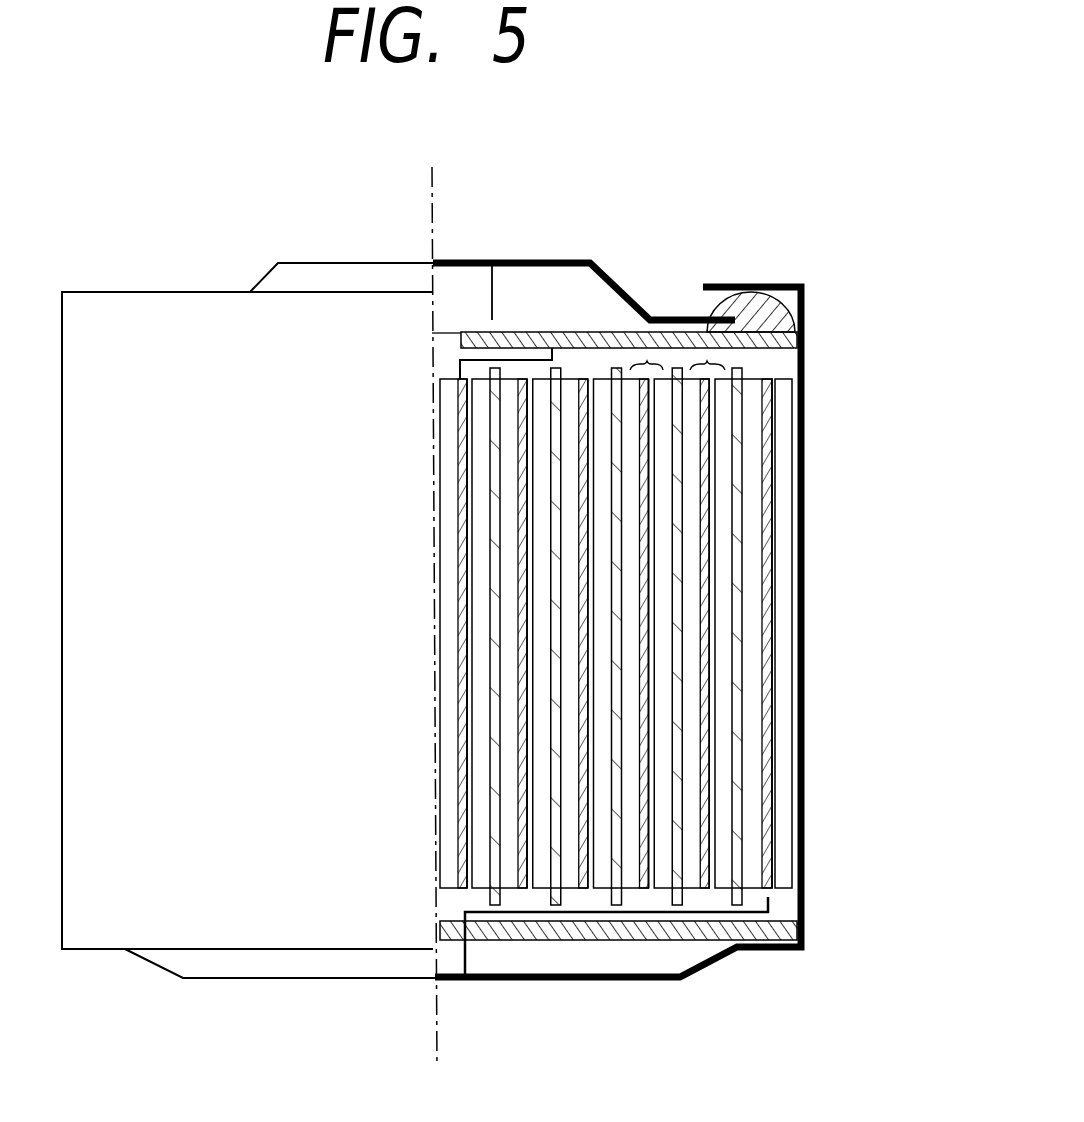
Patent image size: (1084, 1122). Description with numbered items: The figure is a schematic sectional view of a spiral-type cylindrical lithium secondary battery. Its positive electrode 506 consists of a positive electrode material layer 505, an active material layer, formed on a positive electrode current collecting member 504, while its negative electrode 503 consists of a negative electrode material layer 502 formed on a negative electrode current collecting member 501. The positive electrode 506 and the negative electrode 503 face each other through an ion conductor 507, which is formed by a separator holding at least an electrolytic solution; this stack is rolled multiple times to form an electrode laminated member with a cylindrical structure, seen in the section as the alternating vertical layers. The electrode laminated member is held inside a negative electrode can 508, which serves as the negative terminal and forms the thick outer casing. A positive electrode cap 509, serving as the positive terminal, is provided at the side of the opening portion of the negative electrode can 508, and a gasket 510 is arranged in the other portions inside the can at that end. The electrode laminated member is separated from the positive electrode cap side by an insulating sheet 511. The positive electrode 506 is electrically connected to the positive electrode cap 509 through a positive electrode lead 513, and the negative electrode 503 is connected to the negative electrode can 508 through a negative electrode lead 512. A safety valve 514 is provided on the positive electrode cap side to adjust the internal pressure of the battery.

The negative electrode current collecting member 501 is at (647, 510).
The negative electrode material layer 502 is at (662, 608).
The negative electrode 503 is at (643, 357).
The positive electrode current collecting member 504 is at (702, 730).
The positive electrode material layer 505 is at (723, 790).
The positive electrode 506 is at (713, 352).
The ion conductor 507 is at (677, 673).
The negative electrode can 508 is at (485, 980).
The positive electrode cap 509 is at (463, 262).
The gasket 510 is at (752, 303).
The insulating sheet 511 is at (795, 335).
The negative electrode lead 512 is at (468, 958).
The positive electrode lead 513 is at (460, 367).
The safety valve 514 is at (475, 277).